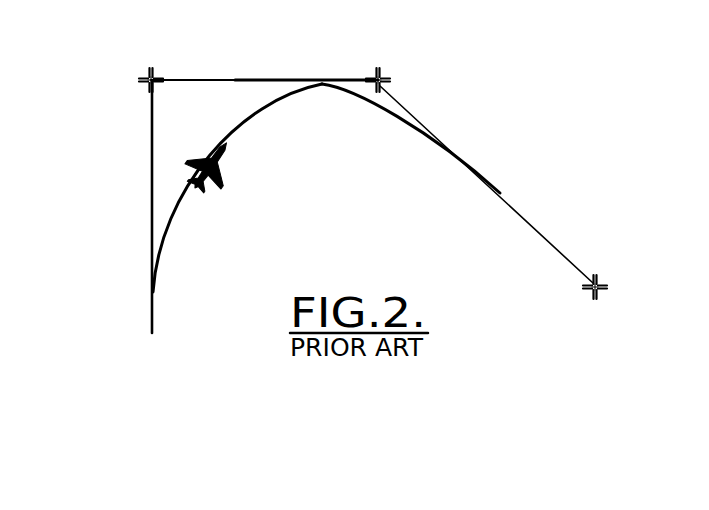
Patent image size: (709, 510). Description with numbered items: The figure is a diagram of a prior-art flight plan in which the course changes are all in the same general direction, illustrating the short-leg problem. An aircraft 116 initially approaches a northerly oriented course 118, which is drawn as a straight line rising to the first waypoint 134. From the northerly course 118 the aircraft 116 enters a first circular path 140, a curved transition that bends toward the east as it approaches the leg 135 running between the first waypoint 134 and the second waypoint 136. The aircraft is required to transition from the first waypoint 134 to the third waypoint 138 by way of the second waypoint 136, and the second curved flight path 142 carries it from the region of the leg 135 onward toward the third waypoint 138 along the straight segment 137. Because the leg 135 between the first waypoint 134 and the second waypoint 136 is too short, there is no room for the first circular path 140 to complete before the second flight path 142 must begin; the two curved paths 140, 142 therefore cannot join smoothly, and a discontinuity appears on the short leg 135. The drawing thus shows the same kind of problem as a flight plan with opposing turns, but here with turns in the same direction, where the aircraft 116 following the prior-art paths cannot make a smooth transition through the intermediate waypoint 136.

The aircraft 116 is at (232, 192).
The northerly oriented course 118 is at (152, 190).
The first waypoint 134 is at (150, 68).
The leg 135 is at (252, 79).
The second waypoint 136 is at (393, 77).
The leg between second and third waypoints 137 is at (497, 189).
The third waypoint 138 is at (600, 277).
The first circular path 140 is at (258, 118).
The second flight path 142 is at (397, 120).